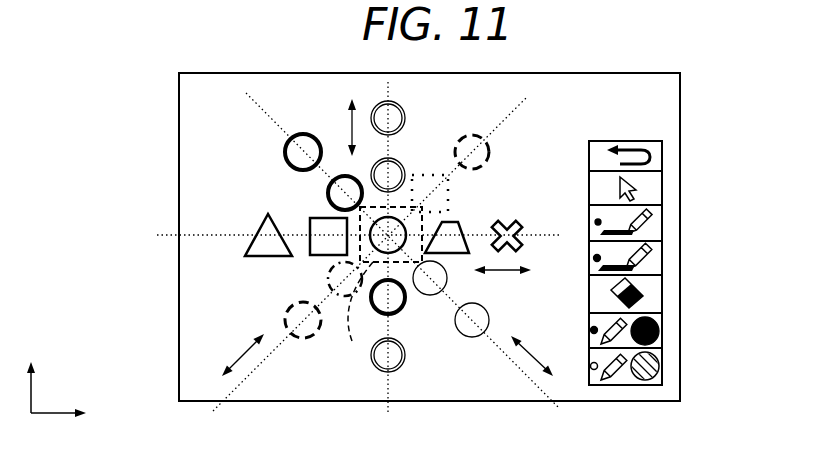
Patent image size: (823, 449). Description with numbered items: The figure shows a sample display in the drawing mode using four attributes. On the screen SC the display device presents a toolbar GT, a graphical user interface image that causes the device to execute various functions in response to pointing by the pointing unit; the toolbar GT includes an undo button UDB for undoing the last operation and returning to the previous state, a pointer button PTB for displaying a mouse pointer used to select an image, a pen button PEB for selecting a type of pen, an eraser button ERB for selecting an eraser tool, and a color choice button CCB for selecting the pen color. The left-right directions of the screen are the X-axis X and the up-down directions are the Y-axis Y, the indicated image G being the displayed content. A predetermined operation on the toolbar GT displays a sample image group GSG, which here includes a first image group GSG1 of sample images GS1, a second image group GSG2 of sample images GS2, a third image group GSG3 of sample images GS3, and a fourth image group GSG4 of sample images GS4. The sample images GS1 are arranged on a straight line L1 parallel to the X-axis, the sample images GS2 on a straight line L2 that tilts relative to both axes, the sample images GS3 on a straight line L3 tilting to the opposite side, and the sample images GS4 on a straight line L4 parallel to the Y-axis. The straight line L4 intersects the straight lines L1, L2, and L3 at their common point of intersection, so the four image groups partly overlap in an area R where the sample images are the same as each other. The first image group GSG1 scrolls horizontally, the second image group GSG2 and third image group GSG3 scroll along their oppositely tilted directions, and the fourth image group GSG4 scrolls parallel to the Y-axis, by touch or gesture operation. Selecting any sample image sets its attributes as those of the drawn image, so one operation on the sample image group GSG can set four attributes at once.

The screen SC is at (665, 111).
The image G is at (686, 123).
The toolbar GT is at (627, 133).
The undo button UDB is at (663, 157).
The pointer button PTB is at (663, 192).
The pen button PEB is at (663, 258).
The eraser button ERB is at (663, 297).
The color choice button CCB is at (663, 365).
The sample image GS1 is at (266, 212).
The sample image GS2 is at (286, 311).
The sample image GS3 is at (490, 313).
The sample image GS4 is at (405, 363).
The sample image group GSG is at (452, 130).
The first image group GSG1 is at (553, 198).
The second image group GSG2 is at (492, 147).
The third image group GSG3 is at (280, 144).
The fourth image group GSG4 is at (366, 101).
The area R is at (360, 312).
The straight line L1 is at (346, 236).
The straight line L2 is at (361, 266).
The straight line L3 is at (411, 264).
The straight line L4 is at (388, 259).
The X-axis X is at (66, 414).
The Y-axis Y is at (29, 376).